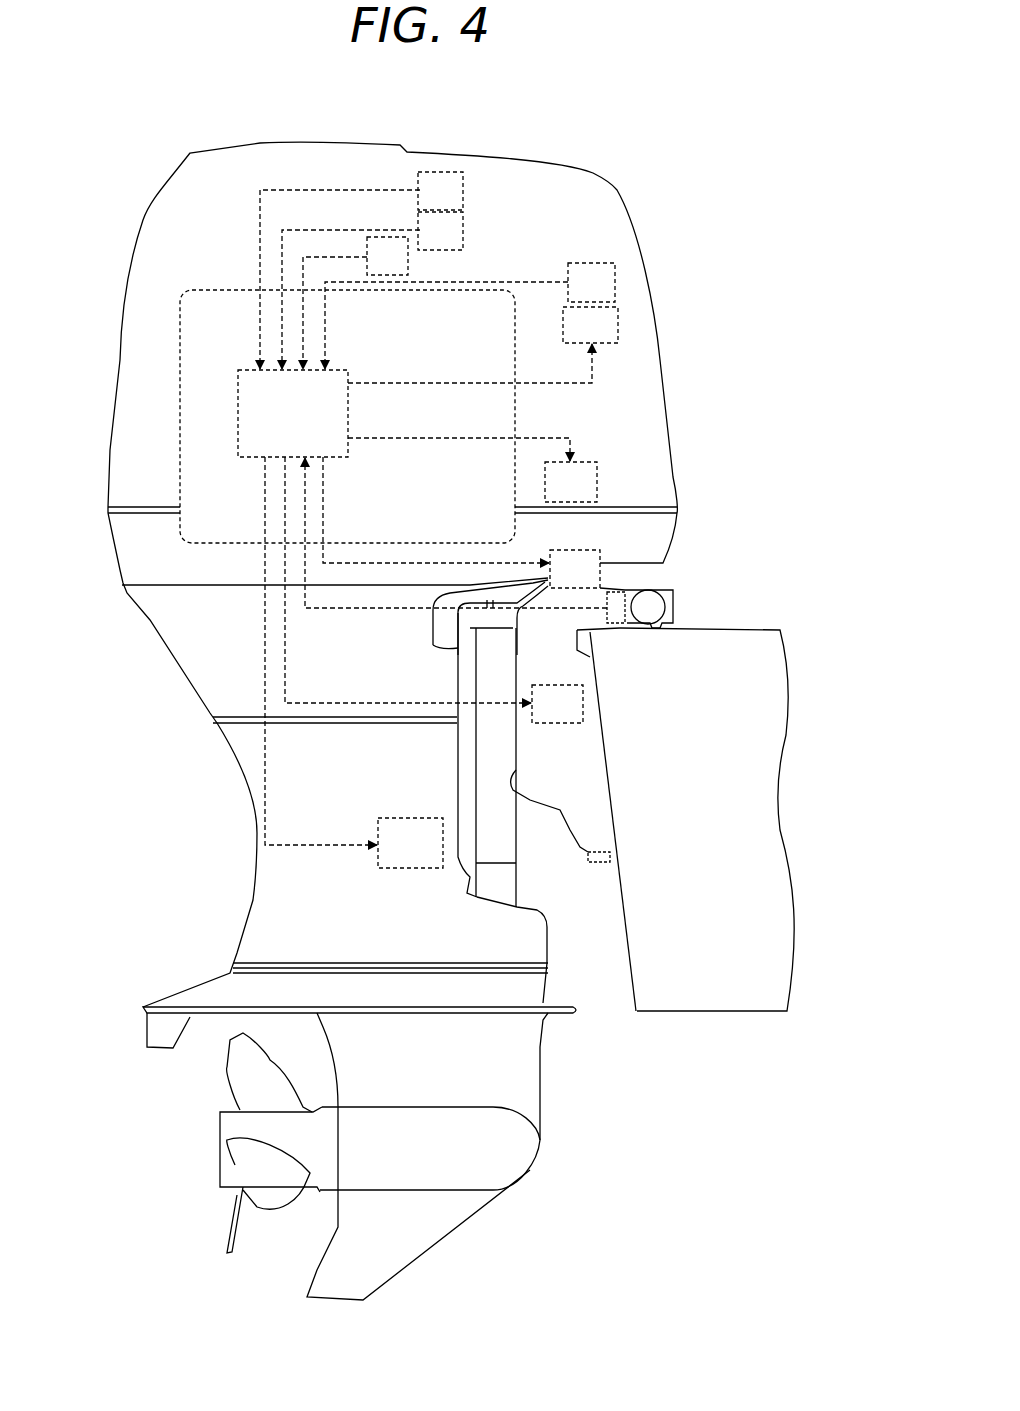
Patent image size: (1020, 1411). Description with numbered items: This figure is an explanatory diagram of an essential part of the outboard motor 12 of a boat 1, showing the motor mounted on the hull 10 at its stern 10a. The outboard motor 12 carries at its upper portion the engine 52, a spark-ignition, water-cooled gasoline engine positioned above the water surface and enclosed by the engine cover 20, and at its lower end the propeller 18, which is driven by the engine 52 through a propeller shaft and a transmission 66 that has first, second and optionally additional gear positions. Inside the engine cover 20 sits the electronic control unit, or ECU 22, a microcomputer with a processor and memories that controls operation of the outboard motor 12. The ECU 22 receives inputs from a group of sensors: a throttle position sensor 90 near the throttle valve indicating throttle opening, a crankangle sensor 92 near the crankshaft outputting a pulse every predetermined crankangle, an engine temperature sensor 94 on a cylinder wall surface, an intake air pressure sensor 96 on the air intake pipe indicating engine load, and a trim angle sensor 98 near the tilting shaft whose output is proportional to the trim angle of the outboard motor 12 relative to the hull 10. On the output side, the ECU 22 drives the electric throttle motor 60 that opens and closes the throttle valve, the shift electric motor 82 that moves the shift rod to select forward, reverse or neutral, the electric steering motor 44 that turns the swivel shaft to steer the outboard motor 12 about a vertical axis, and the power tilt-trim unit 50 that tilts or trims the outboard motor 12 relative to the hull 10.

The boat 1 is at (789, 355).
The hull 10 is at (678, 1014).
The stern 10a is at (648, 1003).
The outboard motor 12 is at (621, 189).
The propeller 18 is at (237, 1222).
The engine cover 20 is at (130, 250).
The electronic control unit (ECU) 22 is at (238, 405).
The electric steering motor 44 is at (575, 569).
The power tilt-trim unit 50 is at (557, 704).
The engine 52 is at (178, 333).
The electric throttle motor 60 is at (590, 325).
The transmission 66 is at (410, 843).
The shift electric motor 82 is at (571, 482).
The throttle position sensor 90 is at (587, 262).
The crankangle sensor 92 is at (465, 192).
The engine temperature sensor 94 is at (465, 230).
The intake air pressure sensor 96 is at (408, 255).
The trim angle sensor 98 is at (600, 588).